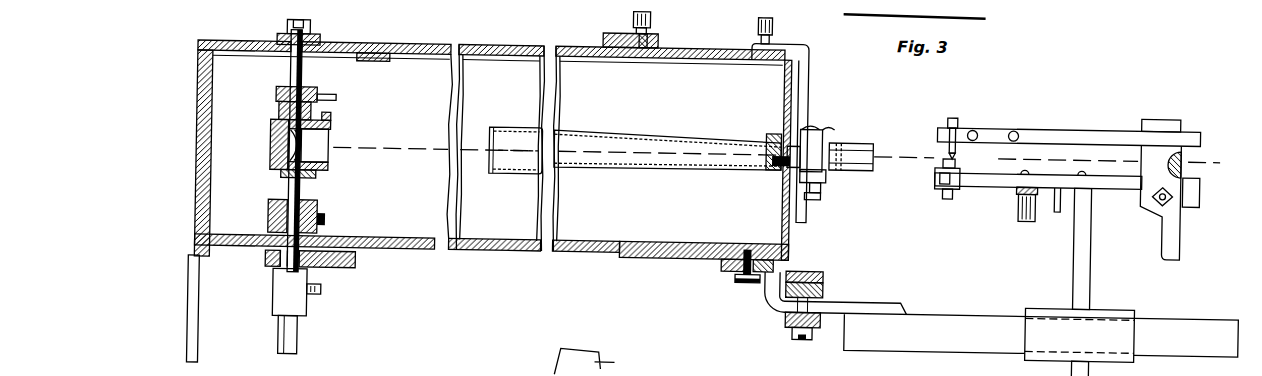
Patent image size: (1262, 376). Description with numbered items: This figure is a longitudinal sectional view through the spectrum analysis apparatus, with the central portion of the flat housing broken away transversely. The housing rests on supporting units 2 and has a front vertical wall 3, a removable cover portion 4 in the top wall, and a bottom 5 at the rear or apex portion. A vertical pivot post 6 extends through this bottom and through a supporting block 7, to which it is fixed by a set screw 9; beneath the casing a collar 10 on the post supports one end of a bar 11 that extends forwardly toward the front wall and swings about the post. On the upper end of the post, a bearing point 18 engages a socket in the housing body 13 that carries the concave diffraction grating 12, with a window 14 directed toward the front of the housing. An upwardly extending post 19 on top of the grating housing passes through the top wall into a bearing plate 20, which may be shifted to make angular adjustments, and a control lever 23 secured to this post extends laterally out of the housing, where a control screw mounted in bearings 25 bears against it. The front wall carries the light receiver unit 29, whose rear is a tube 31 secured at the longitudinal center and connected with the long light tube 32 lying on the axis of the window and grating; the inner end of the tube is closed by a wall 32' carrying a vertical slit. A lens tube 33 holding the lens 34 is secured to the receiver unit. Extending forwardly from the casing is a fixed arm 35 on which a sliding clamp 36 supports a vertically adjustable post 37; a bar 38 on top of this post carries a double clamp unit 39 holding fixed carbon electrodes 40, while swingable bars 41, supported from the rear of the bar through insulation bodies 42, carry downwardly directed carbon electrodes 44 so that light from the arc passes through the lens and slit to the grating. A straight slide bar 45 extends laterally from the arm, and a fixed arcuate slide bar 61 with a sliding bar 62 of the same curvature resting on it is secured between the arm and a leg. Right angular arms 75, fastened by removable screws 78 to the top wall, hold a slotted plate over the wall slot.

The supporting units 2 is at (203, 345).
The front vertical wall 3 is at (788, 80).
The removable cover portion 4 is at (510, 40).
The bottom 5 is at (432, 248).
The vertical pivot post 6 is at (292, 186).
The supporting block 7 is at (319, 201).
The set screw 9 is at (327, 218).
The collar 10 is at (321, 290).
The bar 11 is at (334, 265).
The concave diffraction grating 12 is at (277, 155).
The housing body 13 is at (277, 132).
The window 14 is at (323, 133).
The bearing point 18 is at (312, 176).
The upwardly extending post 19 is at (306, 72).
The bearing plate 20 is at (312, 33).
The control lever 23 is at (277, 93).
The bearings 25 is at (1224, 340).
The light receiver unit 29 is at (813, 132).
The tube 31 is at (772, 149).
The light tube 32 is at (668, 136).
The wall 32' is at (513, 137).
The lens tube 33 is at (862, 135).
The lens 34 is at (847, 163).
The fixed arm 35 is at (893, 290).
The sliding clamp 36 is at (1130, 314).
The vertically adjustable post 37 is at (1095, 274).
The bar 38 is at (1123, 167).
The double clamp unit 39 is at (957, 177).
The fixed carbon electrode 40 is at (947, 185).
The vertically swingable electrode carrying bars 41 is at (1085, 113).
The insulation body 42 is at (1168, 108).
The carbon electrode 44 is at (955, 107).
The straight slide bar 45 is at (787, 313).
The fixed arcuate slide bar 61 is at (825, 281).
The sliding bar 62 is at (810, 261).
The right angular arms 75 is at (788, 36).
The removable screws 78 is at (760, 10).